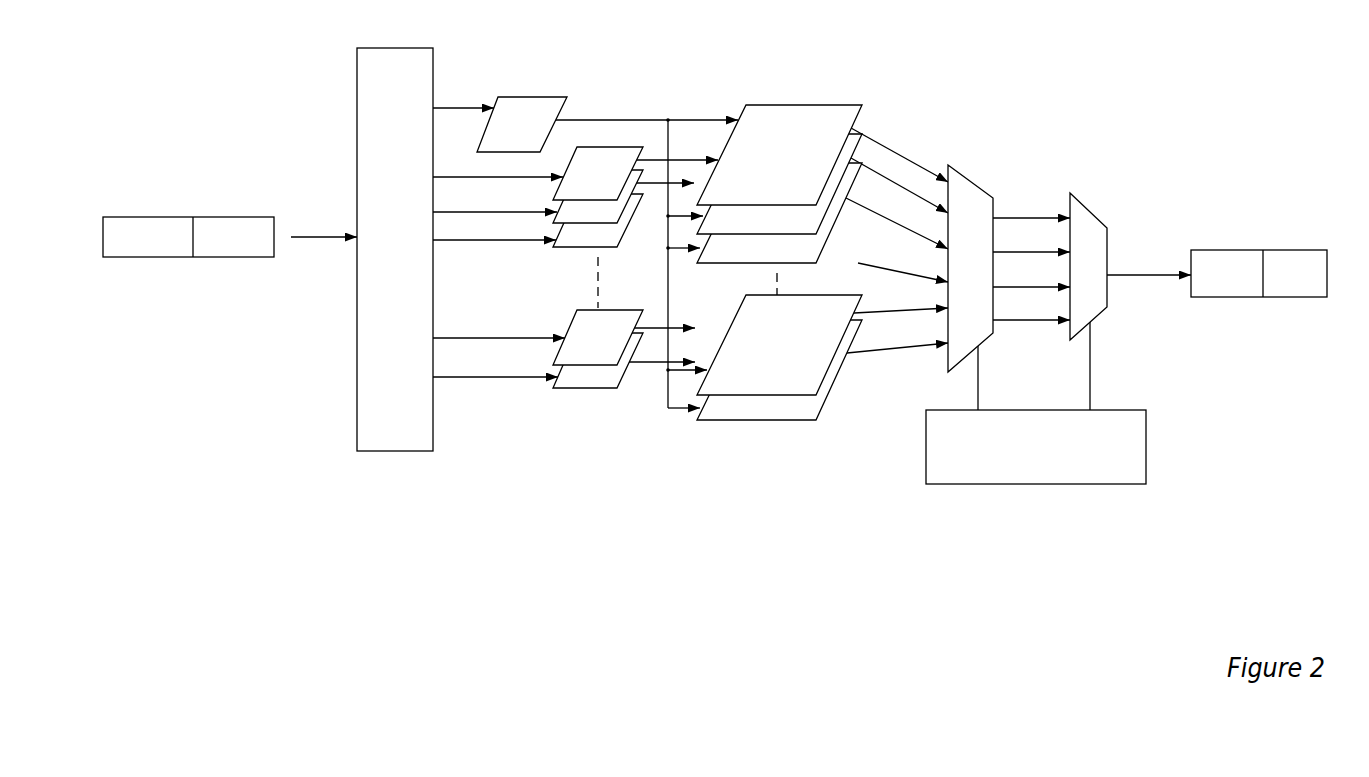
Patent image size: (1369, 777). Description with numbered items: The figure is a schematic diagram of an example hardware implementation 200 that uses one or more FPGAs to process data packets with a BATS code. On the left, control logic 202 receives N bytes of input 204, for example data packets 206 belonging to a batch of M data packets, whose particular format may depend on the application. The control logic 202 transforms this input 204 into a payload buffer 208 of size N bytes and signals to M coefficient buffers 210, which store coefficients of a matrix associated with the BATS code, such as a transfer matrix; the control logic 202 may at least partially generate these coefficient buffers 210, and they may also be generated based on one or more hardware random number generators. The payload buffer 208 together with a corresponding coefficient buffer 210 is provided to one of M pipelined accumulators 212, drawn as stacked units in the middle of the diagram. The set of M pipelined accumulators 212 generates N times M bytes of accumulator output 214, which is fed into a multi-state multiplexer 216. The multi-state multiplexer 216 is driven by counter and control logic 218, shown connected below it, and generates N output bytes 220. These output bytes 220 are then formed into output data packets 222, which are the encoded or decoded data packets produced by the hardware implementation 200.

The hardware implementation 200 is at (478, 627).
The control logic 202 is at (415, 436).
The input 204 is at (328, 247).
The data packets 206 is at (258, 259).
The payload buffer 208 is at (537, 136).
The coefficient buffers 210 is at (615, 186).
The pipelined accumulators 212 is at (795, 166).
The accumulator output 214 is at (897, 138).
The multi-state multiplexer 216 is at (1096, 213).
The counter and control logic 218 is at (1143, 480).
The output bytes 220 is at (1151, 257).
The output data packets 222 is at (1300, 305).